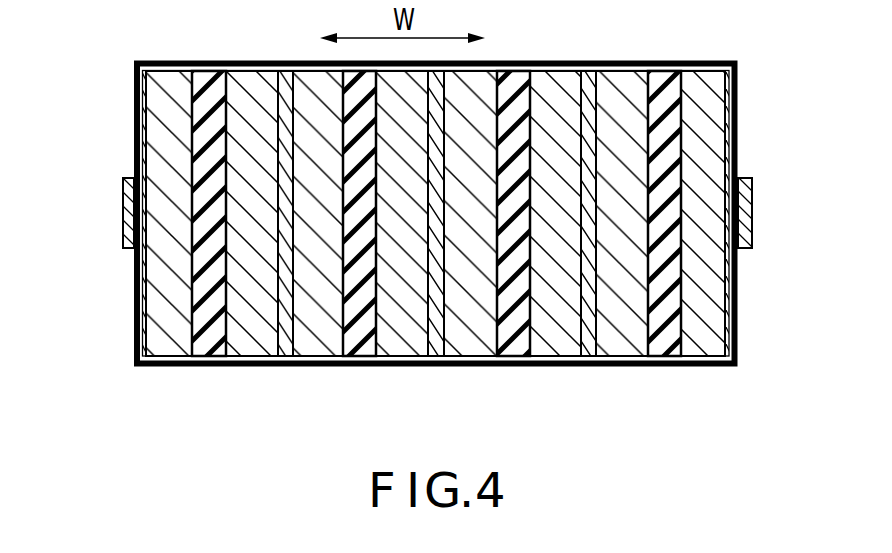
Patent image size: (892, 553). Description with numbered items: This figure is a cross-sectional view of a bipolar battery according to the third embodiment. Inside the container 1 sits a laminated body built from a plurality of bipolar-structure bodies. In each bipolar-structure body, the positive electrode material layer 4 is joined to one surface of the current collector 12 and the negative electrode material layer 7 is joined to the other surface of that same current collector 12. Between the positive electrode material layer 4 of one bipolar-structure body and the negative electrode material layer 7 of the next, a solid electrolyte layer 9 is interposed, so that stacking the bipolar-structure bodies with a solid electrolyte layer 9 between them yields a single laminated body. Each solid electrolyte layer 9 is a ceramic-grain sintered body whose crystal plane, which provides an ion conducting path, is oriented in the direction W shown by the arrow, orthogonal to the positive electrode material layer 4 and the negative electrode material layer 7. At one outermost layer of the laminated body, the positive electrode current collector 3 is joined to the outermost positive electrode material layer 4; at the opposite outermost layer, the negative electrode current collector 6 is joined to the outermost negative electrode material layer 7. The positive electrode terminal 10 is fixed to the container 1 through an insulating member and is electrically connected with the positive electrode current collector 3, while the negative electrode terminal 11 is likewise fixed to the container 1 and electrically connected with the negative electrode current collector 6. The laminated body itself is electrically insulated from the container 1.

The container 1 is at (436, 252).
The positive electrode current collector 3 is at (733, 362).
The positive electrode material layer 4 is at (254, 356).
The negative electrode current collector 6 is at (146, 358).
The negative electrode material layer 7 is at (175, 356).
The solid electrolyte layer 9 is at (216, 356).
The positive electrode terminal 10 is at (752, 200).
The negative electrode terminal 11 is at (123, 215).
The current collector 12 is at (287, 356).